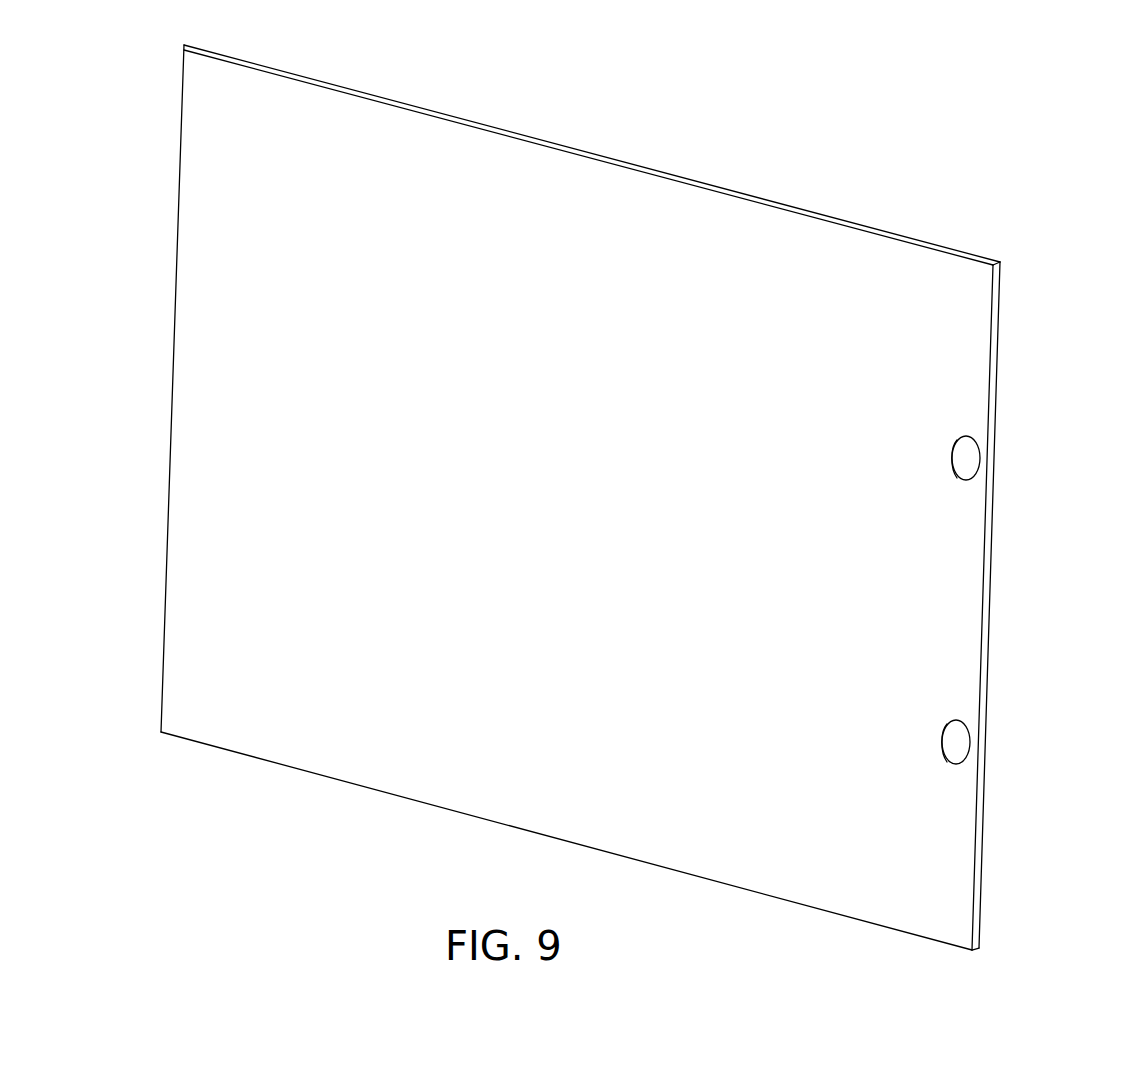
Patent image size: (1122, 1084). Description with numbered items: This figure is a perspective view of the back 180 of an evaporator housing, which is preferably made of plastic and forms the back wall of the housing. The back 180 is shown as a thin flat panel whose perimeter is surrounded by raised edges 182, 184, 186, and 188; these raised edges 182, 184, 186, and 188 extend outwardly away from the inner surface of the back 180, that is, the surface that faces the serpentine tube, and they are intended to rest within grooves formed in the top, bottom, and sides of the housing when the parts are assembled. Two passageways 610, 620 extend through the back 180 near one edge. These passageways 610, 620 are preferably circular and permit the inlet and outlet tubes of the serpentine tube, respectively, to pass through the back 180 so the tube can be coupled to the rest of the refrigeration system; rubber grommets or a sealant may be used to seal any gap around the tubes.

The back 180 is at (588, 497).
The raised edge 182 is at (997, 345).
The raised edge 184 is at (716, 184).
The raised edge 186 is at (172, 397).
The raised edge 188 is at (456, 812).
The passageway 610 is at (958, 744).
The passageway 620 is at (967, 460).